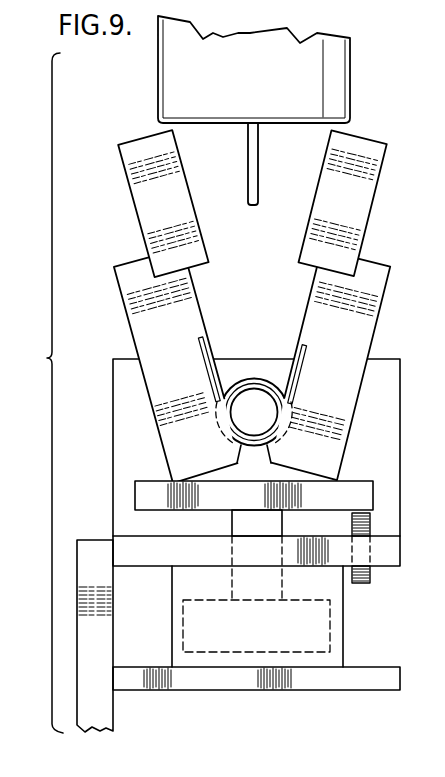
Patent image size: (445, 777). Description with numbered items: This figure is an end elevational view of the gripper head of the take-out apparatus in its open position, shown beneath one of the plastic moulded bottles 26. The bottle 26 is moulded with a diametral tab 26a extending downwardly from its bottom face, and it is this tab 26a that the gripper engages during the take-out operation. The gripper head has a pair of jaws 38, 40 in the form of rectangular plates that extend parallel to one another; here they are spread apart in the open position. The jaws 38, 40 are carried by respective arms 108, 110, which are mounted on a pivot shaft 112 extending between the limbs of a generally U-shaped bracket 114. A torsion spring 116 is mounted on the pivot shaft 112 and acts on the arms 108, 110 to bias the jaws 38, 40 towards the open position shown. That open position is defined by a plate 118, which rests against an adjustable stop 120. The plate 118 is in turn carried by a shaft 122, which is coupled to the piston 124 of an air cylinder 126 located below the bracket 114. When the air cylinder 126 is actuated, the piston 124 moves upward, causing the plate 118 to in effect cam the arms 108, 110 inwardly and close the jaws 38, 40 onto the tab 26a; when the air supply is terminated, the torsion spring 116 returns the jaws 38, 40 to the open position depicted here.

The plastic moulded bottle 26 is at (161, 72).
The diametral tab 26a is at (258, 168).
The jaw 38 is at (147, 205).
The jaw 40 is at (362, 208).
The arm 108 is at (377, 313).
The arm 110 is at (143, 322).
The pivot shaft 112 is at (258, 400).
The U-shaped bracket 114 is at (101, 428).
The torsion spring 116 is at (305, 353).
The plate 118 is at (365, 493).
The adjustable stop 120 is at (372, 575).
The shaft 122 is at (230, 518).
The piston 124 is at (200, 653).
The air cylinder 126 is at (343, 650).